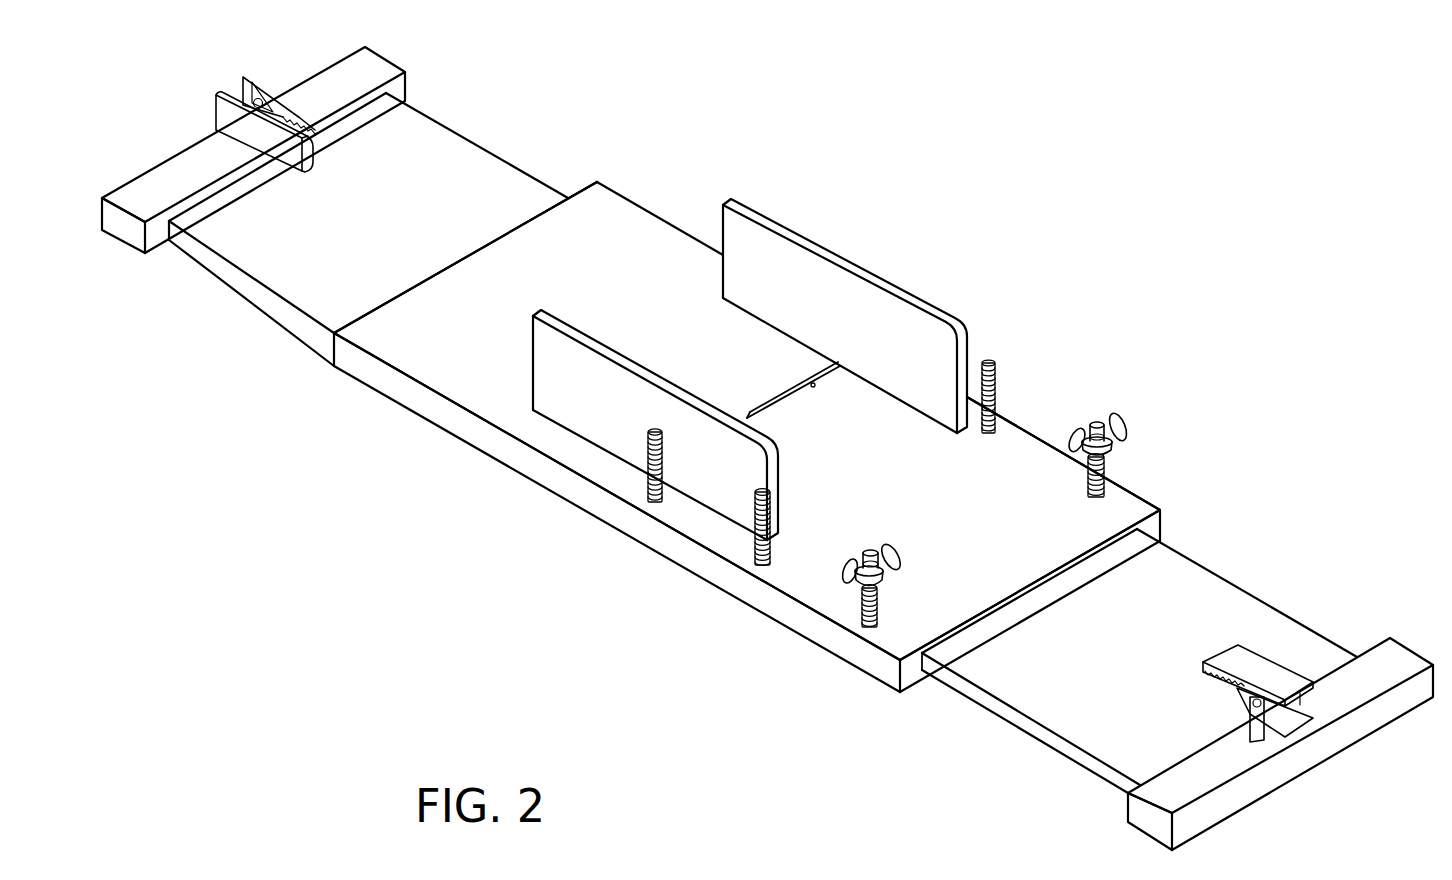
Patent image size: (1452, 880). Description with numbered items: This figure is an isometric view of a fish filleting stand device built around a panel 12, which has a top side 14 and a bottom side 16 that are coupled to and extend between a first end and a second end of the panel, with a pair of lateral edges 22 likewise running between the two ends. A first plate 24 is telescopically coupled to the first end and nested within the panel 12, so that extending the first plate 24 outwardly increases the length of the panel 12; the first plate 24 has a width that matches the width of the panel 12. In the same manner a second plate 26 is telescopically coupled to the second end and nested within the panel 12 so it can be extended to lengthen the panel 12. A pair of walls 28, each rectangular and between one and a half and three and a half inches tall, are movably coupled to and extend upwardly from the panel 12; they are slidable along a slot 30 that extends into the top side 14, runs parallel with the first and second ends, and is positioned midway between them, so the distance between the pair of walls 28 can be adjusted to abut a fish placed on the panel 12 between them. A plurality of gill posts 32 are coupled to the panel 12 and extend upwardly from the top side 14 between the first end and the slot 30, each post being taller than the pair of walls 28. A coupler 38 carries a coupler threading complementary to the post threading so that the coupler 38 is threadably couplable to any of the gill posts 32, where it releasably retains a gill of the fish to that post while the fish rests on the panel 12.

The panel 12 is at (1023, 427).
The top side 14 is at (615, 210).
The bottom side 16 is at (447, 432).
The lateral edges 22 is at (582, 485).
The first plate 24 is at (1153, 823).
The second plate 26 is at (128, 225).
The pair of walls 28 is at (817, 247).
The slot 30 is at (770, 404).
The plurality of gill posts 32 is at (1090, 497).
The coupler 38 is at (1120, 420).